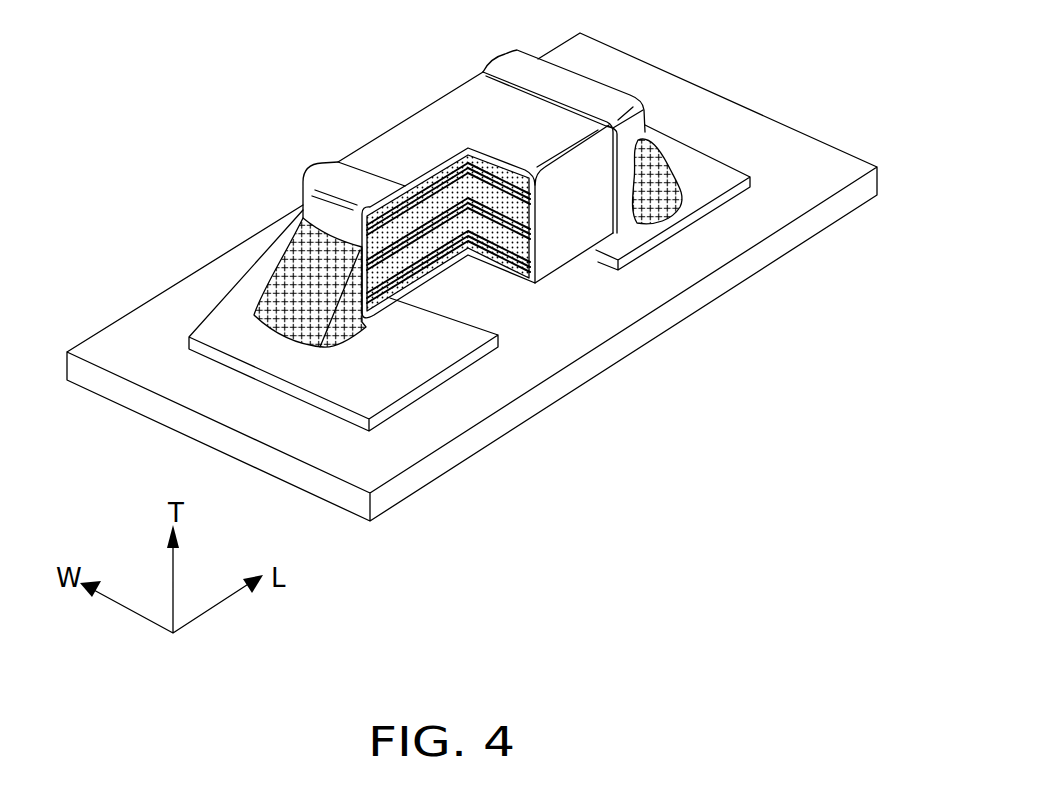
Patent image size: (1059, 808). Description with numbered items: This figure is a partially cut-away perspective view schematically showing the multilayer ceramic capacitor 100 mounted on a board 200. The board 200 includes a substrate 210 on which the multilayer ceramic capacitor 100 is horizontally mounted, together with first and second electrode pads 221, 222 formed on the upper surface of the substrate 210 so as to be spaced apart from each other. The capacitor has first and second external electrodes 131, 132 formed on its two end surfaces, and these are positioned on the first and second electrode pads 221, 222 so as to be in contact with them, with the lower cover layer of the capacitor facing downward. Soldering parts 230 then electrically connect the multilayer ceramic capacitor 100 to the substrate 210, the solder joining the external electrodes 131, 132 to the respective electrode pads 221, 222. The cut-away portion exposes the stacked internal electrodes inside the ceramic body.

The multilayer ceramic capacitor 100 is at (437, 160).
The first external electrode 131 is at (310, 182).
The second external electrode 132 is at (595, 90).
The board 200 is at (472, 298).
The substrate 210 is at (540, 402).
The first electrode pad 221 is at (400, 372).
The second electrode pad 222 is at (707, 187).
The soldering parts 230 is at (300, 258).